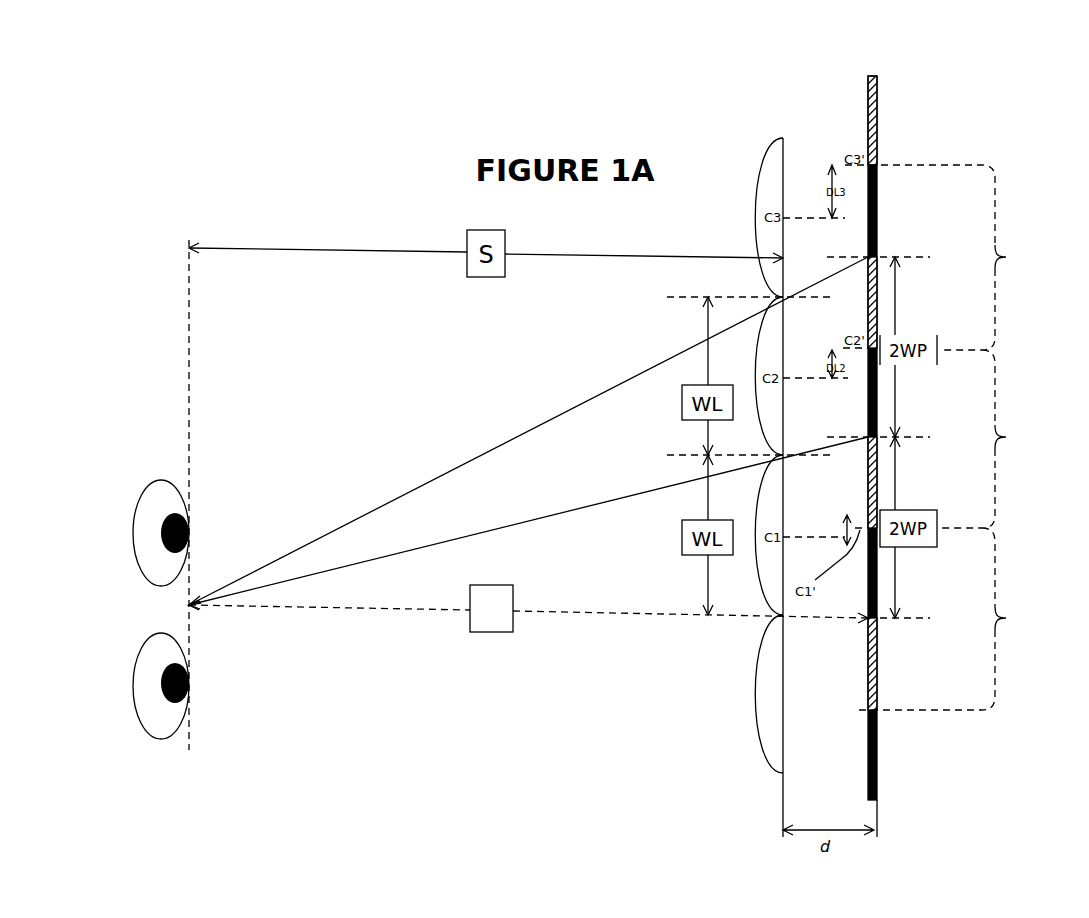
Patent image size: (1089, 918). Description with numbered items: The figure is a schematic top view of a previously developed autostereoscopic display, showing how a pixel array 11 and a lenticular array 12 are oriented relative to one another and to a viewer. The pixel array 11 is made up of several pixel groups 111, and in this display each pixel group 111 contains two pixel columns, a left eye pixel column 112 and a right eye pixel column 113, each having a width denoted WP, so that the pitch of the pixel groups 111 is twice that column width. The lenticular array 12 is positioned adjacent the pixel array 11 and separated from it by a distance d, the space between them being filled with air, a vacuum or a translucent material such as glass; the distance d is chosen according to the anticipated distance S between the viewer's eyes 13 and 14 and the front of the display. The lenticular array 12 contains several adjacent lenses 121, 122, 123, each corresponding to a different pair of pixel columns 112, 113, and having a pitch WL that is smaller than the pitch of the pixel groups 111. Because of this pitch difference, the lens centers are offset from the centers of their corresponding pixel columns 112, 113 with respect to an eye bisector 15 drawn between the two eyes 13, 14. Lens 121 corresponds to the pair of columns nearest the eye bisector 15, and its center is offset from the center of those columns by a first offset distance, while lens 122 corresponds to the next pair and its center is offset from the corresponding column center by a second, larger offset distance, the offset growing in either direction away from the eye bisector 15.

The pixel array 11 is at (885, 70).
The lenticular array 12 is at (782, 134).
The viewer eye 13 is at (133, 512).
The viewer eye 14 is at (133, 673).
The eye bisector 15 is at (316, 611).
The pixel group 111 is at (1006, 257).
The left eye pixel column 112 is at (880, 208).
The right eye pixel column 113 is at (880, 124).
The lens 121 is at (786, 548).
The lens 122 is at (786, 397).
The lens 123 is at (786, 233).